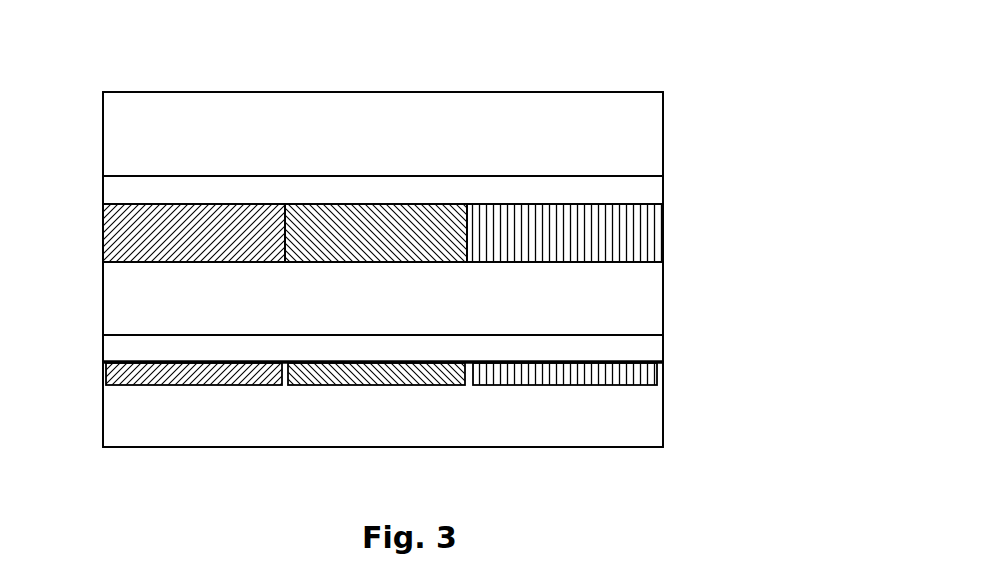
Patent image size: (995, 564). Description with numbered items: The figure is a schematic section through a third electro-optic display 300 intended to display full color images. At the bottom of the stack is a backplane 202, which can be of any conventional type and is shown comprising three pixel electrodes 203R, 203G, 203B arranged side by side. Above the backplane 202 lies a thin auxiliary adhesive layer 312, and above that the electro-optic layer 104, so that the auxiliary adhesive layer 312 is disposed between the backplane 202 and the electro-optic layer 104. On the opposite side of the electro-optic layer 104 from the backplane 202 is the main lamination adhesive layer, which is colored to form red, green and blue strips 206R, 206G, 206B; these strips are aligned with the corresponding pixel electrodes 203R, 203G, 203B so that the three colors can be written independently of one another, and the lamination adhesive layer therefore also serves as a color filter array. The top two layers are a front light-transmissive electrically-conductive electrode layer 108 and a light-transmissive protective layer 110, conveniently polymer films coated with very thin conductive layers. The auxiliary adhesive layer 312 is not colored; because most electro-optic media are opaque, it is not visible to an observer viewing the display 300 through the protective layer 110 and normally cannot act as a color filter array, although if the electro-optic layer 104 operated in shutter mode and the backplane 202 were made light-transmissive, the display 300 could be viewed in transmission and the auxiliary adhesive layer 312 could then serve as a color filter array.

The third display 300 is at (470, 70).
The light-transmissive protective layer 110 is at (613, 135).
The front light-transmissive electrically-conductive electrode layer 108 is at (620, 190).
The red strip 206R is at (145, 239).
The green strip 206G is at (310, 214).
The blue strip 206B is at (617, 239).
The electro-optic layer 104 is at (613, 307).
The auxiliary adhesive layer 312 is at (618, 352).
The backplane 202 is at (622, 425).
The pixel electrode 203R is at (163, 373).
The pixel electrode 203G is at (463, 383).
The pixel electrode 203B is at (607, 375).